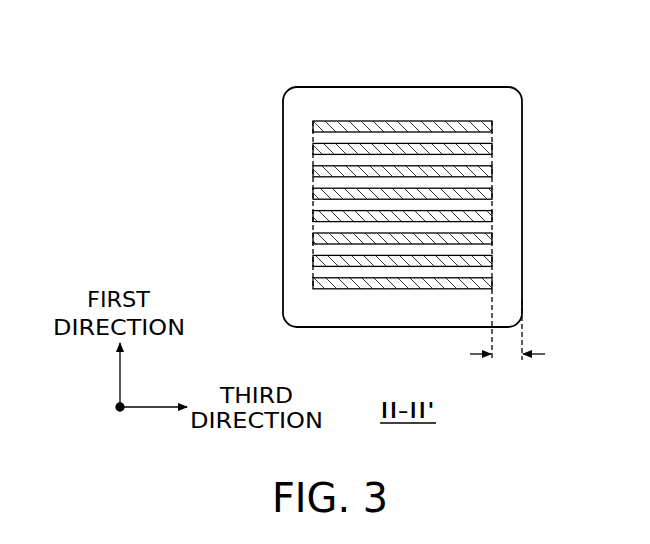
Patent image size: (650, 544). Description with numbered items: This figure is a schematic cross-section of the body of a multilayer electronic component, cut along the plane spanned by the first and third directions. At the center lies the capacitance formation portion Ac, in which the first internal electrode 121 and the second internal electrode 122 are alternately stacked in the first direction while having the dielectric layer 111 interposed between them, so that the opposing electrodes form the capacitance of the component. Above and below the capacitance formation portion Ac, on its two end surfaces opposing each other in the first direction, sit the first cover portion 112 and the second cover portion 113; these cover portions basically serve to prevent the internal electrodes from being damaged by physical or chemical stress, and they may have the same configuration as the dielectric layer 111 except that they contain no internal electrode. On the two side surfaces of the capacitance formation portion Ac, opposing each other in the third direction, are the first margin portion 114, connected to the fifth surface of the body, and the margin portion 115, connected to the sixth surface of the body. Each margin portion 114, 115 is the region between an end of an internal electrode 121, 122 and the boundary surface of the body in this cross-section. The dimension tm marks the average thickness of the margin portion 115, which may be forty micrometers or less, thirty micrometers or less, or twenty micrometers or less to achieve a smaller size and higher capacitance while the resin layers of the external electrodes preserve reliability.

The dielectric layer 111 is at (492, 140).
The first cover portion 112 is at (401, 96).
The second cover portion 113 is at (403, 320).
The first margin portion 114 is at (298, 242).
The margin portion 115 is at (513, 233).
The first internal electrode 121 is at (492, 126).
The second internal electrode 122 is at (492, 153).
The capacitance formation portion Ac is at (313, 211).
The average thickness of the margin portion tm is at (507, 337).